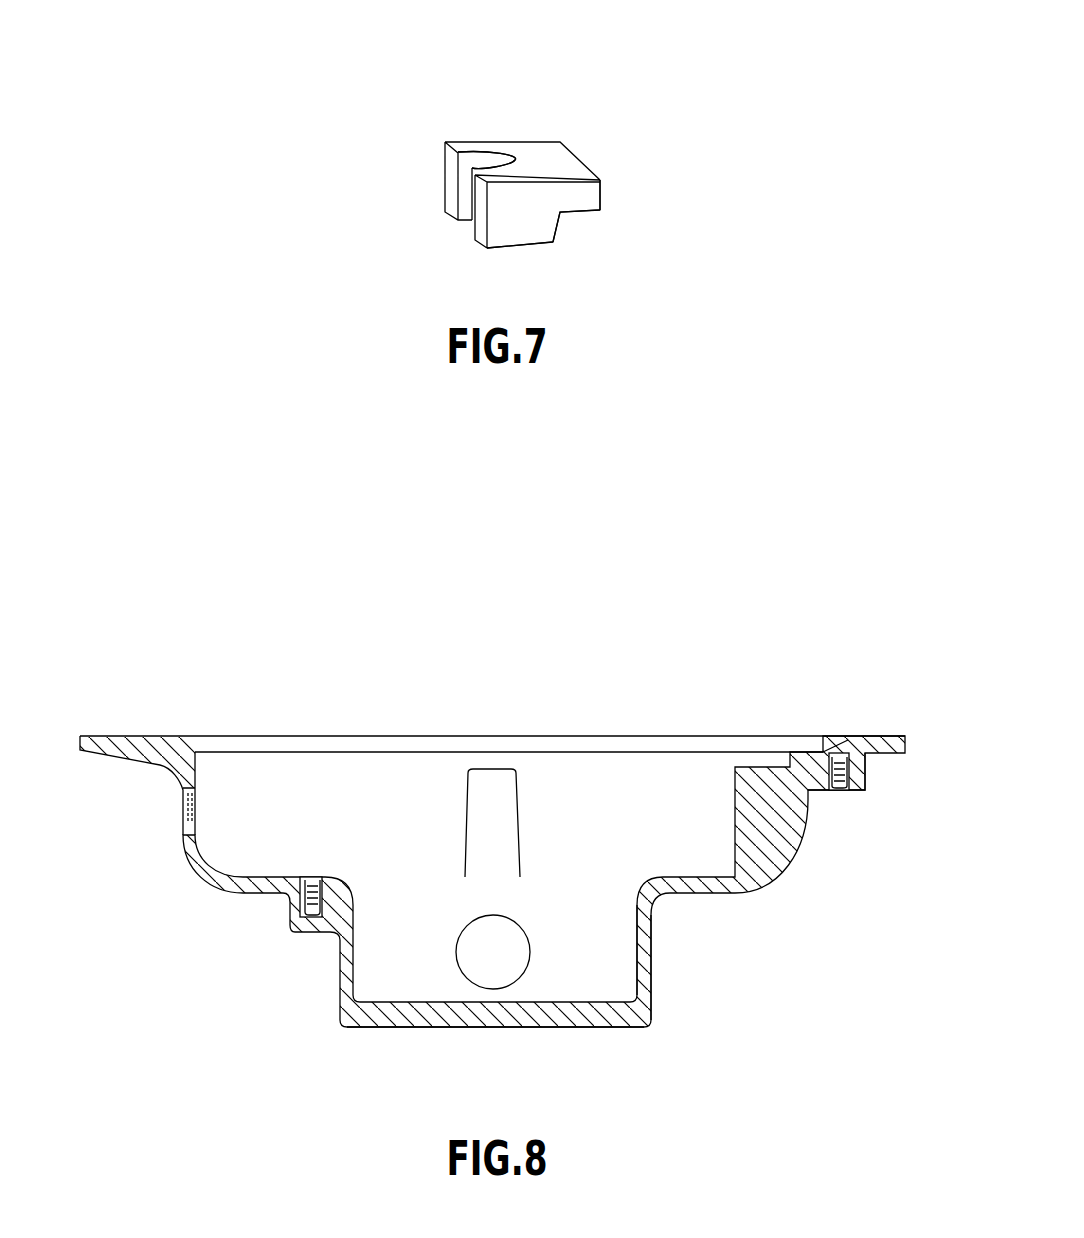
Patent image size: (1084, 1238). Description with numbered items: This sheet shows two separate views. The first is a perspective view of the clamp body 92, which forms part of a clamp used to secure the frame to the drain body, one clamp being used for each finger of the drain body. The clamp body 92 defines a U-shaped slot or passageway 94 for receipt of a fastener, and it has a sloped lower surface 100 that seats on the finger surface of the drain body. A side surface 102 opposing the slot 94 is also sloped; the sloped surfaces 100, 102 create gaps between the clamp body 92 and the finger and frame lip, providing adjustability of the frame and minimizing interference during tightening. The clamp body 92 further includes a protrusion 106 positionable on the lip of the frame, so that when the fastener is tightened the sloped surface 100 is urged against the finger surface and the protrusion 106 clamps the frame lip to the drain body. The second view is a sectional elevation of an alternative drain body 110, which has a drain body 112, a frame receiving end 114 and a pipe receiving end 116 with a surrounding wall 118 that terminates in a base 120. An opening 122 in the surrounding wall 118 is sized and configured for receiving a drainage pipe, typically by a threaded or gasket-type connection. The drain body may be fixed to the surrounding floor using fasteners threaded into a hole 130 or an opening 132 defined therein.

In FIG. 7, the clamp body 92 is at (563, 113).
In FIG. 7, the U-shaped slot 94 is at (468, 167).
In FIG. 7, the sloped lower surface 100 is at (520, 250).
In FIG. 7, the side surface 102 is at (562, 227).
In FIG. 7, the protrusion 106 is at (600, 188).
In FIG. 8, the alternative drain body 110 is at (493, 835).
In FIG. 8, the drain body 112 is at (728, 895).
In FIG. 8, the frame receiving end 114 is at (867, 775).
In FIG. 8, the pipe receiving end 116 is at (650, 990).
In FIG. 8, the surrounding wall 118 is at (620, 962).
In FIG. 8, the base 120 is at (578, 1018).
In FIG. 8, the opening 122 is at (503, 953).
In FIG. 8, the hole 130 is at (838, 792).
In FIG. 8, the opening 132 is at (185, 812).